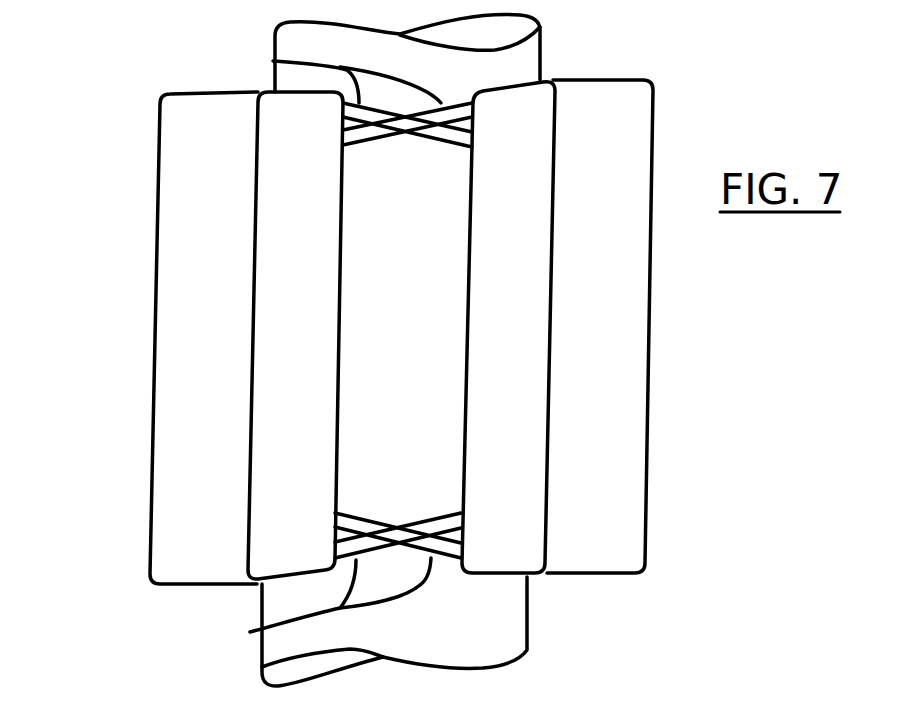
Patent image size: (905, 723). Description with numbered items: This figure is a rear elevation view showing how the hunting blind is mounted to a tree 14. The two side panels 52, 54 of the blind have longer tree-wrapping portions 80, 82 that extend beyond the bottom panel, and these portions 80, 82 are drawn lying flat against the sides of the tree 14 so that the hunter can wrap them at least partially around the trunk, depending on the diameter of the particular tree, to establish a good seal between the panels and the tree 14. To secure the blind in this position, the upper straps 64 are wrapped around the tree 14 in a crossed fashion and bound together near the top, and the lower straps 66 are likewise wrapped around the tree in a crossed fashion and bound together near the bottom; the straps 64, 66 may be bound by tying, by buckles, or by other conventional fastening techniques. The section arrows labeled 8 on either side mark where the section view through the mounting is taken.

The tree 14 is at (556, 55).
The side panel 52 is at (177, 340).
The side panel 54 is at (630, 330).
The upper straps 64 is at (273, 61).
The lower straps 66 is at (250, 632).
The tree-wrapping portion 80 is at (287, 397).
The tree-wrapping portion 82 is at (517, 414).
The section line 8- 8 is at (143, 472).